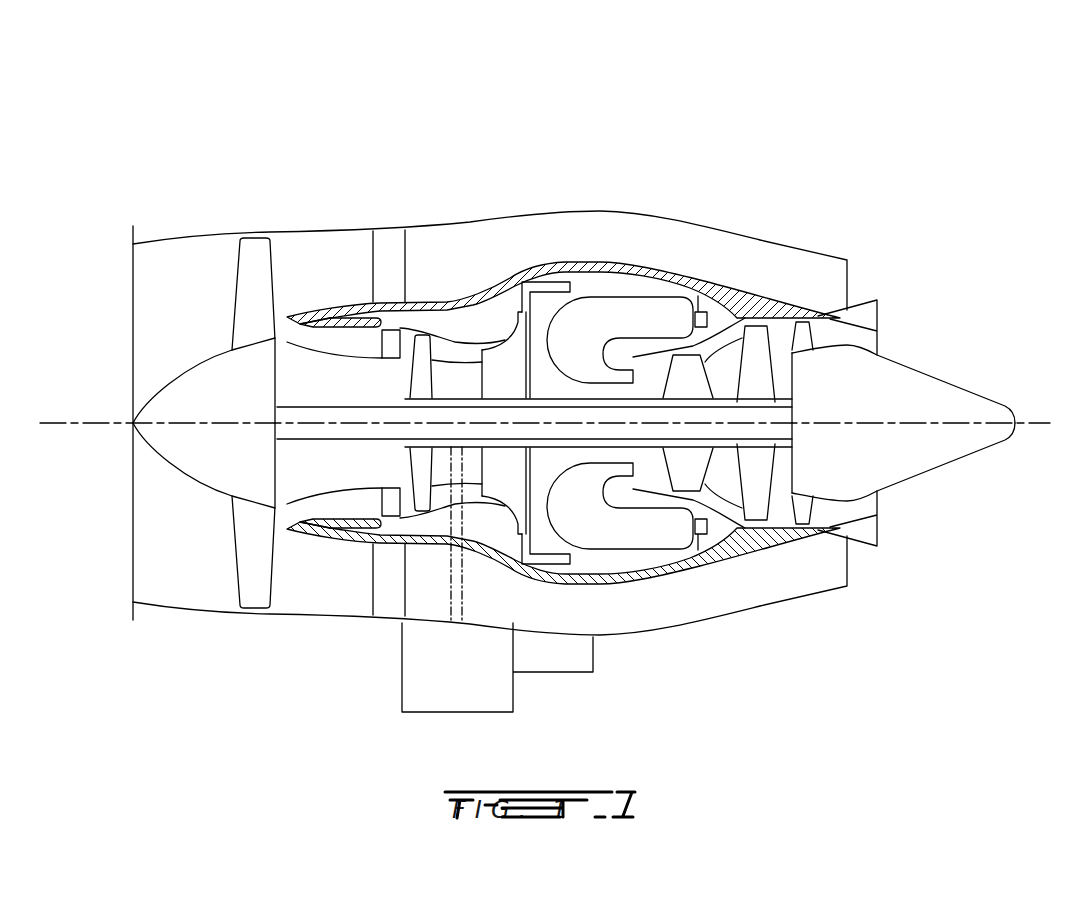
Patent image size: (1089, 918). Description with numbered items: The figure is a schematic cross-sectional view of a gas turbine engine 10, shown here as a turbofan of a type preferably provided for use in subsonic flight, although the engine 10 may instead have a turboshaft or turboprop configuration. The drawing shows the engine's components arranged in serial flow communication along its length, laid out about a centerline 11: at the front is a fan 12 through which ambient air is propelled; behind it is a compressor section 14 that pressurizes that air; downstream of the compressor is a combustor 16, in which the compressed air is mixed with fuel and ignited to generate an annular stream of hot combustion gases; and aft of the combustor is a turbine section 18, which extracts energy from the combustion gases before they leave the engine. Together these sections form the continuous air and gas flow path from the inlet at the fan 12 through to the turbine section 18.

The gas turbine engine 10 is at (738, 160).
The engine axis 11 is at (1045, 423).
The fan 12 is at (250, 543).
The compressor section 14 is at (448, 345).
The combustor 16 is at (618, 313).
The turbine section 18 is at (723, 473).